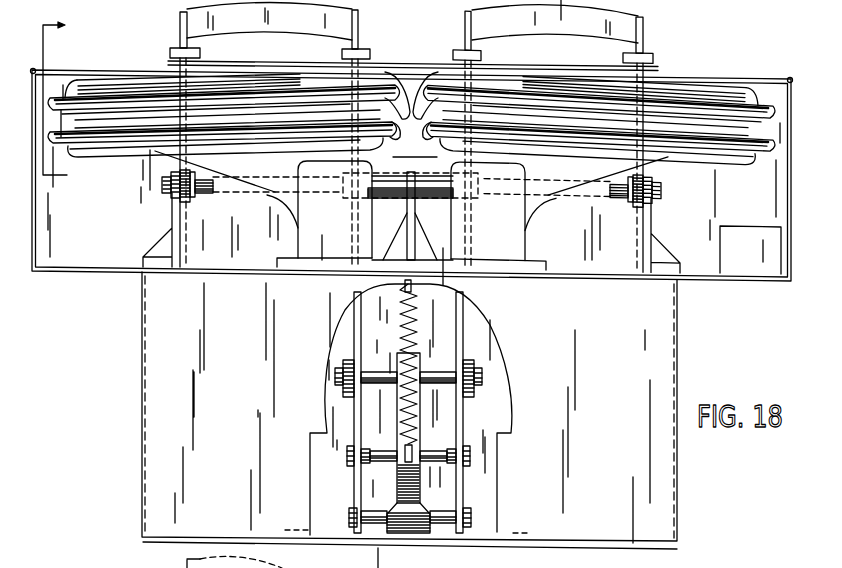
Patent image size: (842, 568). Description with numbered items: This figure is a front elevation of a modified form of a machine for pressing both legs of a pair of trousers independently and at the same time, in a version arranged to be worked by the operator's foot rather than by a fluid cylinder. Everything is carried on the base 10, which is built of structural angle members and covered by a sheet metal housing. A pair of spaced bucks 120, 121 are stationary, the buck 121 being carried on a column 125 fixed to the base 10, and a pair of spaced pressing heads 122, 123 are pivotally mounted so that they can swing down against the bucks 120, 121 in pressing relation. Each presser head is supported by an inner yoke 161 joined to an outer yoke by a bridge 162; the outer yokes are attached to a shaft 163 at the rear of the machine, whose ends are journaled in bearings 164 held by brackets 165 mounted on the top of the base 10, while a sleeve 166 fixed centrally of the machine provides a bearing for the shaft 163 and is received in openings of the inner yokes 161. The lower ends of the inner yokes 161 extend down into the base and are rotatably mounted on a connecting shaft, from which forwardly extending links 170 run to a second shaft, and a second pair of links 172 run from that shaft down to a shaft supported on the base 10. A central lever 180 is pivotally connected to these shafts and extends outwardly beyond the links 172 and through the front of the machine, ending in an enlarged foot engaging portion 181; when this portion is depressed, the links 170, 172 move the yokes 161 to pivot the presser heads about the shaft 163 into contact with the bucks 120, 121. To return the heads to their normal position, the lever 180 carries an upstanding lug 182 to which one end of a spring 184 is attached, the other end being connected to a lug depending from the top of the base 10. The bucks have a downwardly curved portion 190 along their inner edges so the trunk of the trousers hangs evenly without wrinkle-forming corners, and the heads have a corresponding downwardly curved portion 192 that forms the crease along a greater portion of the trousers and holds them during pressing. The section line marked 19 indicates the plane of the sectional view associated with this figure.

The base 10 is at (140, 380).
The section line 19- 19 is at (235, 292).
The buck 120 is at (122, 150).
The buck 121 is at (728, 162).
The pressing head 122 is at (128, 88).
The pressing head 123 is at (703, 97).
The column 125 is at (297, 237).
The inner yoke 161 is at (180, 26).
The bridge 162 is at (330, 13).
The shaft 163 is at (210, 193).
The bearing 164 is at (662, 191).
The bracket 165 is at (172, 227).
The sleeve 166 is at (408, 199).
The link 170 is at (463, 418).
The link 172 is at (447, 488).
The central lever 180 is at (400, 474).
The foot engaging portion 181 is at (421, 525).
The upstanding lug 182 is at (402, 450).
The spring 184 is at (412, 336).
The downwardly curved portion 190 is at (412, 213).
The downwardly curved portion 192 is at (438, 51).